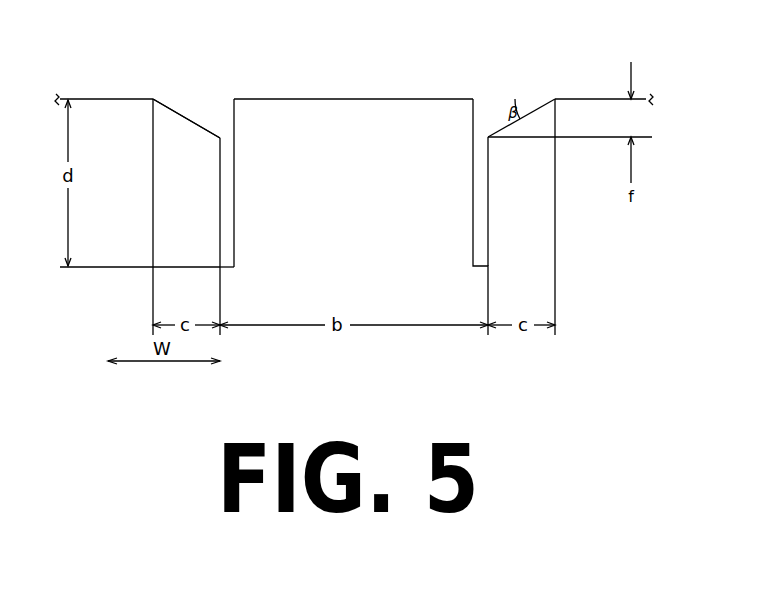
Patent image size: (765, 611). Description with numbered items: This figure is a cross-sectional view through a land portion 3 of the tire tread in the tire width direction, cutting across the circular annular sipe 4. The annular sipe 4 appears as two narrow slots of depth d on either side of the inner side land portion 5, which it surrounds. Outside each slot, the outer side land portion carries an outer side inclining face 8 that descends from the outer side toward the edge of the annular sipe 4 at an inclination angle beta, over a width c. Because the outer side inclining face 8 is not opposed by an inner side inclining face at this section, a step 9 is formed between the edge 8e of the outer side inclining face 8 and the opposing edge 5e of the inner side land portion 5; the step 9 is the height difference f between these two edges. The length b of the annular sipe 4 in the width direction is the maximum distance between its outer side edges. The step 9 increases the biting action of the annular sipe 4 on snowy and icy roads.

The land portion 3 is at (106, 98).
The annular sipe 4 is at (496, 148).
The inner side land portion 5 is at (290, 99).
The edge of inner side land portion 5e is at (234, 99).
The outer side inclining face 8 is at (180, 112).
The edge of outer side inclining face 8e is at (219, 124).
The step 9 is at (221, 136).